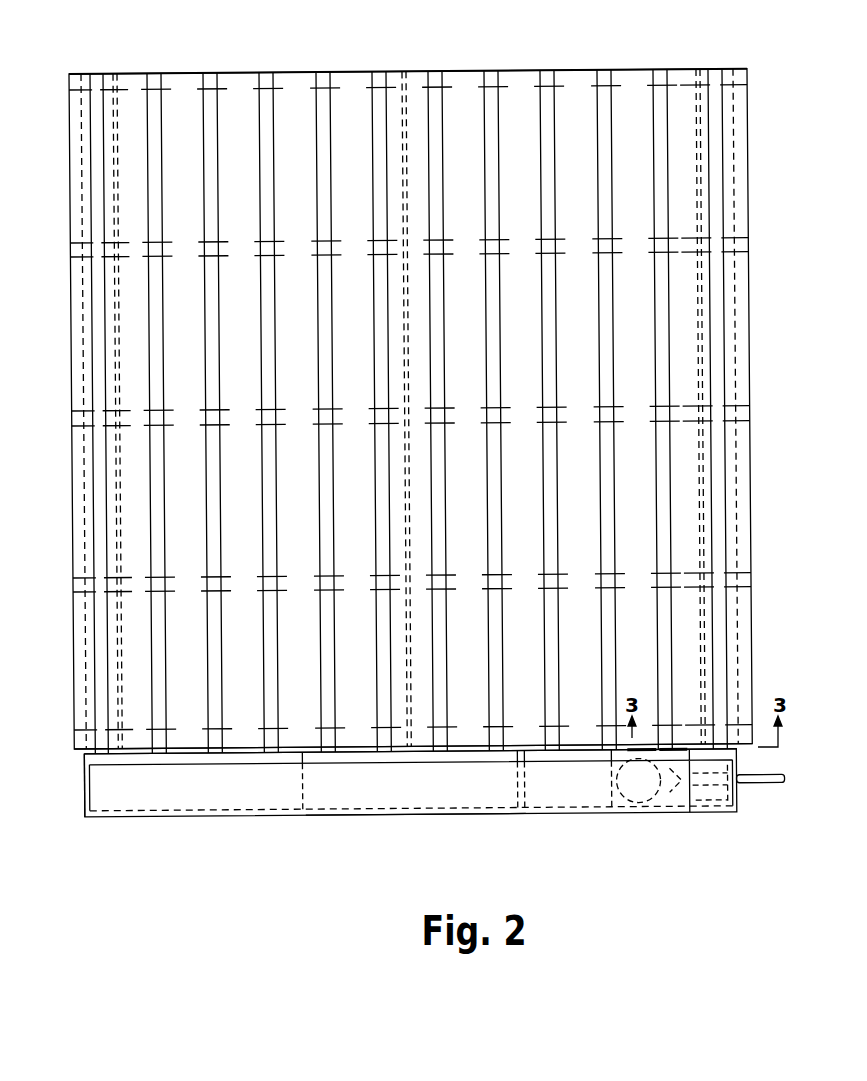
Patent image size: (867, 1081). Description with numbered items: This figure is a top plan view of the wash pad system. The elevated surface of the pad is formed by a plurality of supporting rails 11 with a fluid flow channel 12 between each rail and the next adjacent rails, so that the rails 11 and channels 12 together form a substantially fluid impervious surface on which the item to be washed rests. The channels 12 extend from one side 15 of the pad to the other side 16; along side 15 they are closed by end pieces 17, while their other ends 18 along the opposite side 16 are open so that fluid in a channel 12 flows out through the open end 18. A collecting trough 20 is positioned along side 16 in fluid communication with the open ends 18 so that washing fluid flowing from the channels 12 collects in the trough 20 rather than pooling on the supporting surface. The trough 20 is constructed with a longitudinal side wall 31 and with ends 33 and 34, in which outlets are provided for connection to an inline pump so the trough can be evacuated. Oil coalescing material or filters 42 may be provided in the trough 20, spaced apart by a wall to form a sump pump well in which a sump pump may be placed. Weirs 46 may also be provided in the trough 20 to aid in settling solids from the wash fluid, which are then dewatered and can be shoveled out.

The supporting rails 11 is at (467, 72).
The fluid flow channels 12 is at (547, 70).
The side of the pad 15 is at (197, 73).
The other side of the pad 16 is at (157, 755).
The end pieces 17 is at (210, 73).
The open ends 18 is at (213, 750).
The collecting trough 20 is at (246, 817).
The longitudinal side wall 31 is at (428, 816).
The trough end 33 is at (740, 795).
The trough end 34 is at (80, 806).
The oil coalescing material or filters 42 is at (618, 786).
The weirs 46 is at (323, 818).